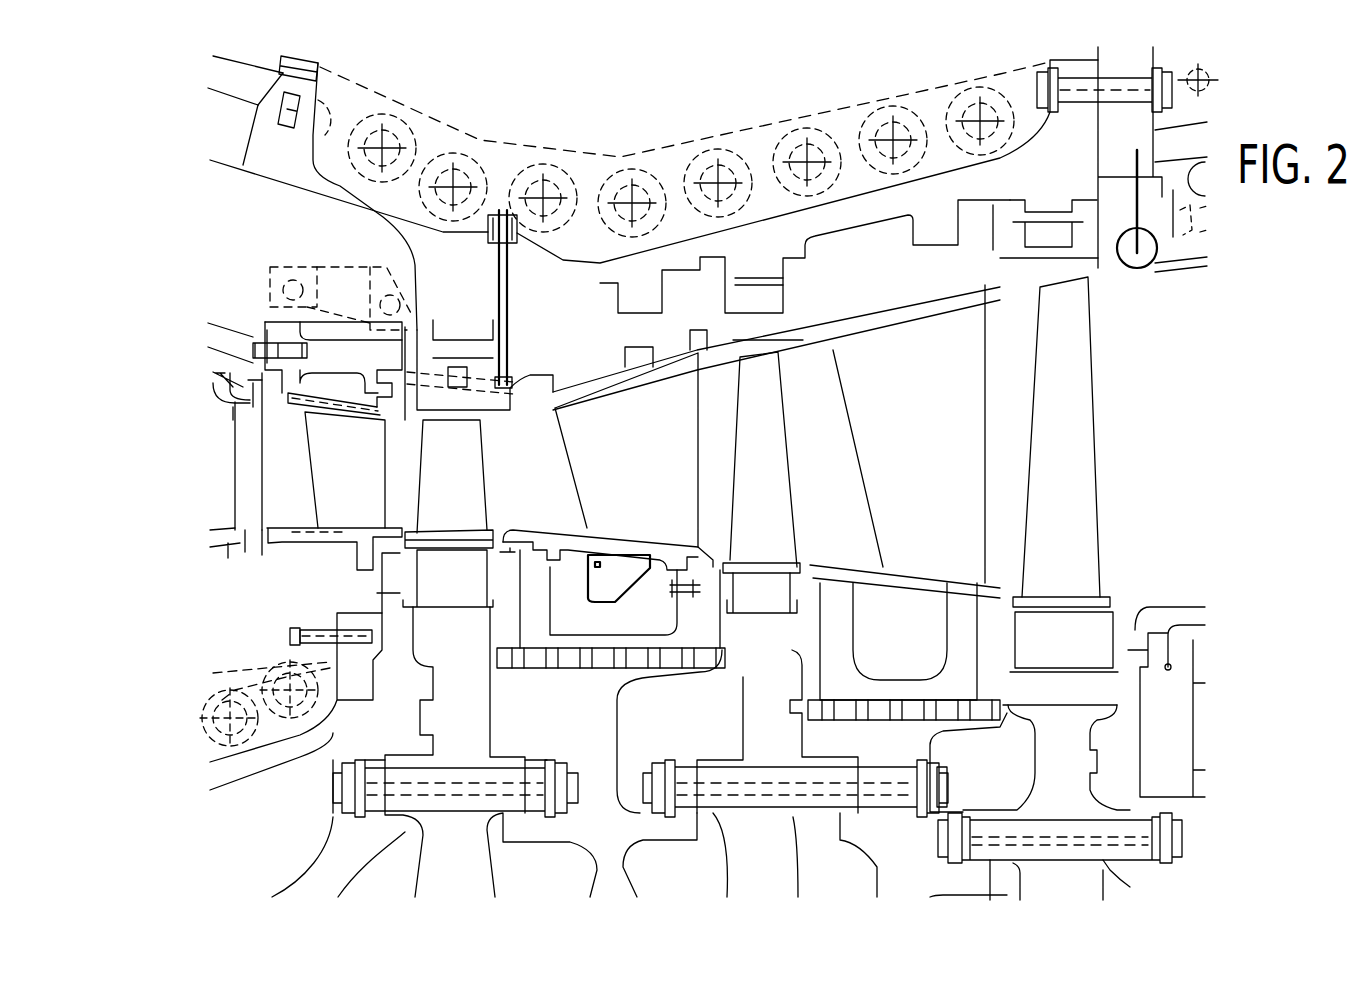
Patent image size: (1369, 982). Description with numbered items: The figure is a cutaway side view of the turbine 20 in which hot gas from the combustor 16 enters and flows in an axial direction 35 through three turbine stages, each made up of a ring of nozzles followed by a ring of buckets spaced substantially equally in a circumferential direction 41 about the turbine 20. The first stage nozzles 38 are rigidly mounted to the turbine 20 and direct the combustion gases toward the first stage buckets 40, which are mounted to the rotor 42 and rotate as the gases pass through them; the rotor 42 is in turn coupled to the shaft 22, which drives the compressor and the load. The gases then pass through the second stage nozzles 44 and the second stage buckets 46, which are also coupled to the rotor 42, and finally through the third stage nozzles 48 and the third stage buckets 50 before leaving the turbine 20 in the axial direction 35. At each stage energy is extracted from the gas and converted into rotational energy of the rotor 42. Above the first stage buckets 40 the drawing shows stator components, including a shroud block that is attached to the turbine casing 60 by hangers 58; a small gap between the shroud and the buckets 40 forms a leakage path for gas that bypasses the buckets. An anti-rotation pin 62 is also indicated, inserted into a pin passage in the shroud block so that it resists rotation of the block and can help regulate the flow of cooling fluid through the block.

The combustor 16 is at (158, 403).
The turbine 20 is at (648, 114).
The shaft 22 is at (330, 862).
The axial direction 35 is at (566, 70).
The first stage nozzles 38 is at (360, 486).
The first stage buckets 40 is at (463, 489).
The circumferential direction 41 is at (498, 88).
The rotor 42 is at (463, 748).
The second stage nozzles 44 is at (643, 479).
The second stage buckets 46 is at (775, 493).
The third stage nozzles 48 is at (962, 463).
The third stage buckets 50 is at (1070, 473).
The hangers 58 is at (493, 327).
The turbine casing 60 is at (383, 220).
The anti-rotation pin 62 is at (507, 275).